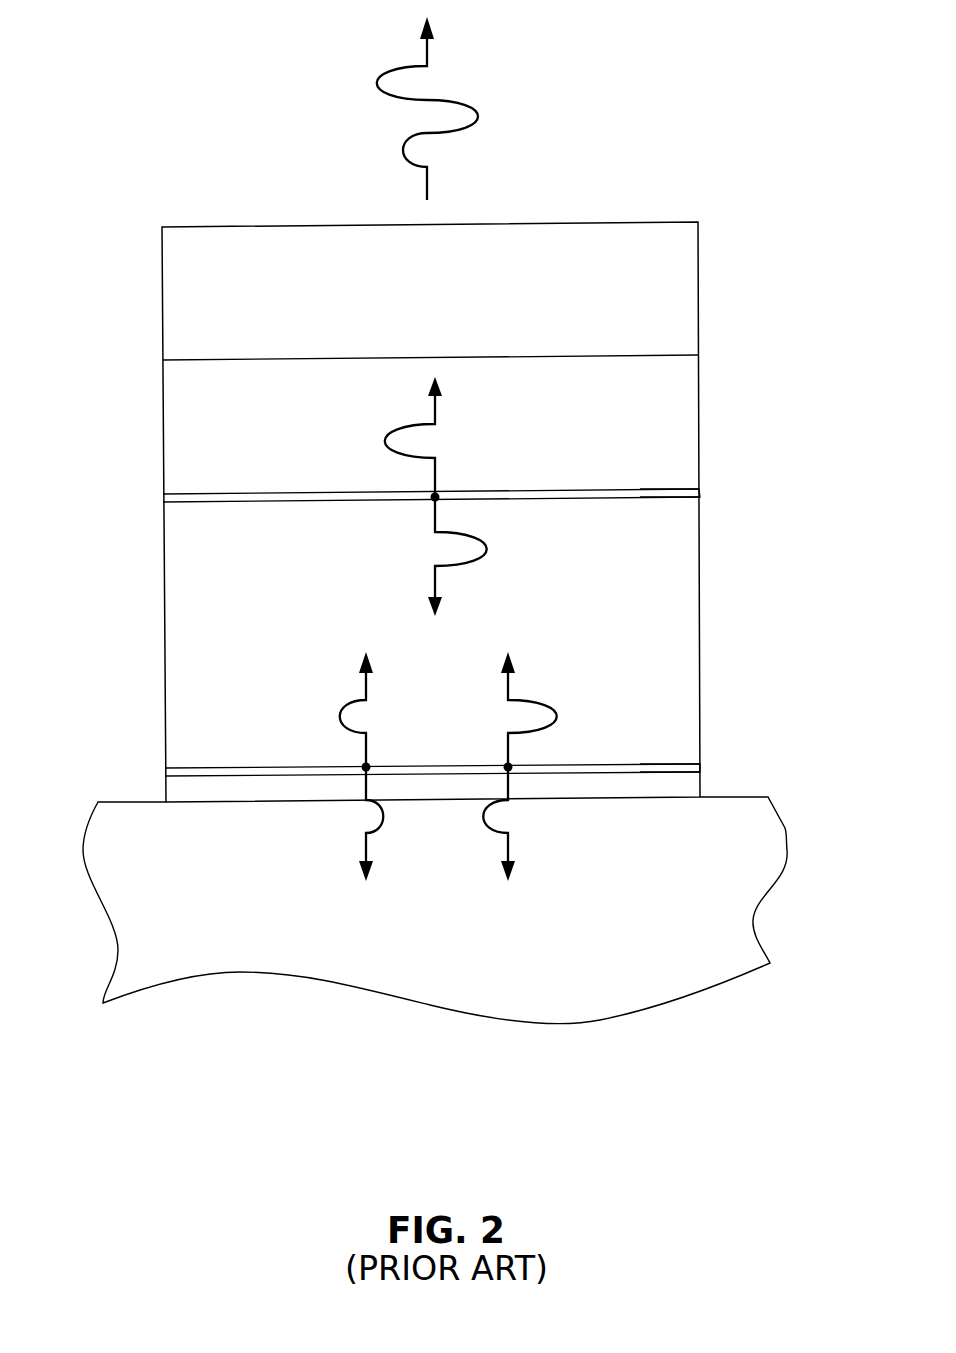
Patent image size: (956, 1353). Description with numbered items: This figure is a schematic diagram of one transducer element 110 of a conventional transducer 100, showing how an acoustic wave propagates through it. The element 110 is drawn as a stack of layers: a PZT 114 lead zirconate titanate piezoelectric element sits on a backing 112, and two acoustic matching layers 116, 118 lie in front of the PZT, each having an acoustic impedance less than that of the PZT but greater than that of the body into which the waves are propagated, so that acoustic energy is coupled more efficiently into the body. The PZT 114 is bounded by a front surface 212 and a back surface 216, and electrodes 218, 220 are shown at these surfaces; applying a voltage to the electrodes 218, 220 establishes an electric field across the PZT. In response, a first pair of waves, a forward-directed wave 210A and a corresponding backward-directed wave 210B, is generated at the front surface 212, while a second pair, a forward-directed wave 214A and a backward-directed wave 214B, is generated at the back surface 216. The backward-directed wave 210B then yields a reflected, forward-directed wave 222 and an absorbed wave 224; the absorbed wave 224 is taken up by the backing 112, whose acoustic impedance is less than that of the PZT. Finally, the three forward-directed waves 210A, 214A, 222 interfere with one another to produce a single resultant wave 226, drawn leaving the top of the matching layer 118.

The transducer 100 is at (166, 98).
The transducer element 110 is at (277, 210).
The backing 112 is at (218, 841).
The piezoelectric element (PZT) 114 is at (214, 576).
The acoustic matching layer 116 is at (213, 426).
The acoustic matching layer 118 is at (213, 296).
The front surface 212 is at (612, 497).
The back surface 216 is at (613, 765).
The electrode 218 is at (700, 493).
The electrode 220 is at (702, 770).
The forward-directed wave 210A is at (437, 476).
The backward-directed wave 210B is at (437, 580).
The reflected wave 222 is at (368, 750).
The absorbed wave 224 is at (368, 850).
The forward-directed wave 214A is at (510, 750).
The backward-directed wave 214B is at (510, 850).
The resultant wave 226 is at (430, 185).